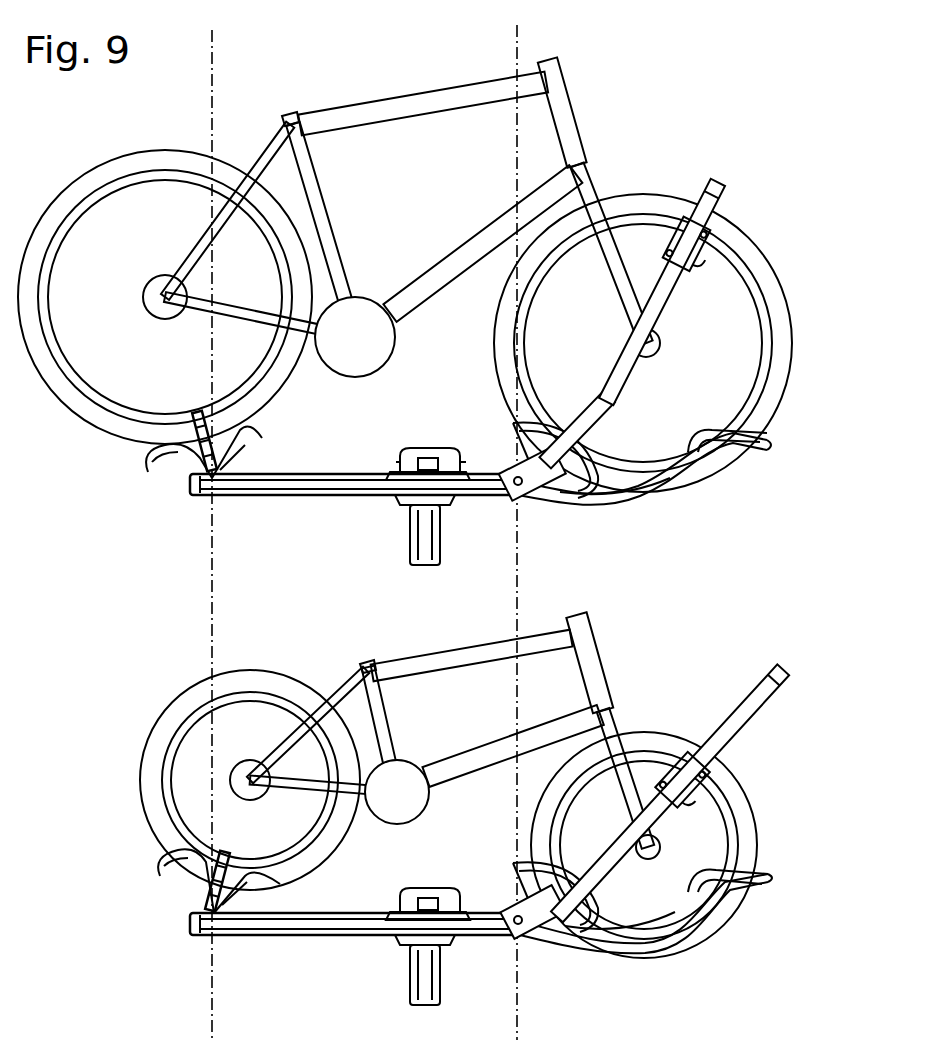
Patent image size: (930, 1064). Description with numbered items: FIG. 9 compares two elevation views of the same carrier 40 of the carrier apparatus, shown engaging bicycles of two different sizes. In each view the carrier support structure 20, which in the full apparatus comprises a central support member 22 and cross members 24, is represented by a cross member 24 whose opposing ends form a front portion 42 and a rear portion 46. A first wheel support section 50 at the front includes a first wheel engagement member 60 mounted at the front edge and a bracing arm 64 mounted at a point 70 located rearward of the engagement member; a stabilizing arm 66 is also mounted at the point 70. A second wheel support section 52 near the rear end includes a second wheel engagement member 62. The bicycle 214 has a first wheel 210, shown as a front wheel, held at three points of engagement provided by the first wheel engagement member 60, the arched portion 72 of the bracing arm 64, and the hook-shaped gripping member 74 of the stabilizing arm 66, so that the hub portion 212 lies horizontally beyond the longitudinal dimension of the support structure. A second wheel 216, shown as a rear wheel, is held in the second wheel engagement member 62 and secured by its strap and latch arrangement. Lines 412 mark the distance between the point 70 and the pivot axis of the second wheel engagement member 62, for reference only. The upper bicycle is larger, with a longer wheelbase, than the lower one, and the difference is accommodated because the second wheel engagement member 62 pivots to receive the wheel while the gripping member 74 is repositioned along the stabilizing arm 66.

The carrier support structure 20 is at (374, 444).
The central support member 22 is at (432, 454).
The cross member 24 is at (310, 496).
The carrier 40 is at (211, 693).
The front portion 42 is at (480, 504).
The rear portion 46 is at (266, 502).
The first wheel support section 50 is at (669, 701).
The second wheel support section 52 is at (128, 457).
The first wheel engagement member 60 is at (560, 428).
The second wheel engagement member 62 is at (250, 428).
The bracing arm 64 is at (710, 462).
The stabilizing arm 66 is at (616, 408).
The point 70 is at (526, 940).
The arched portion 72 is at (766, 442).
The gripping member 74 is at (700, 262).
The first wheel 210 is at (765, 268).
The hub portion 212 is at (666, 339).
The bicycle 214 is at (72, 178).
The second wheel 216 is at (60, 384).
The lines 412 is at (216, 74).